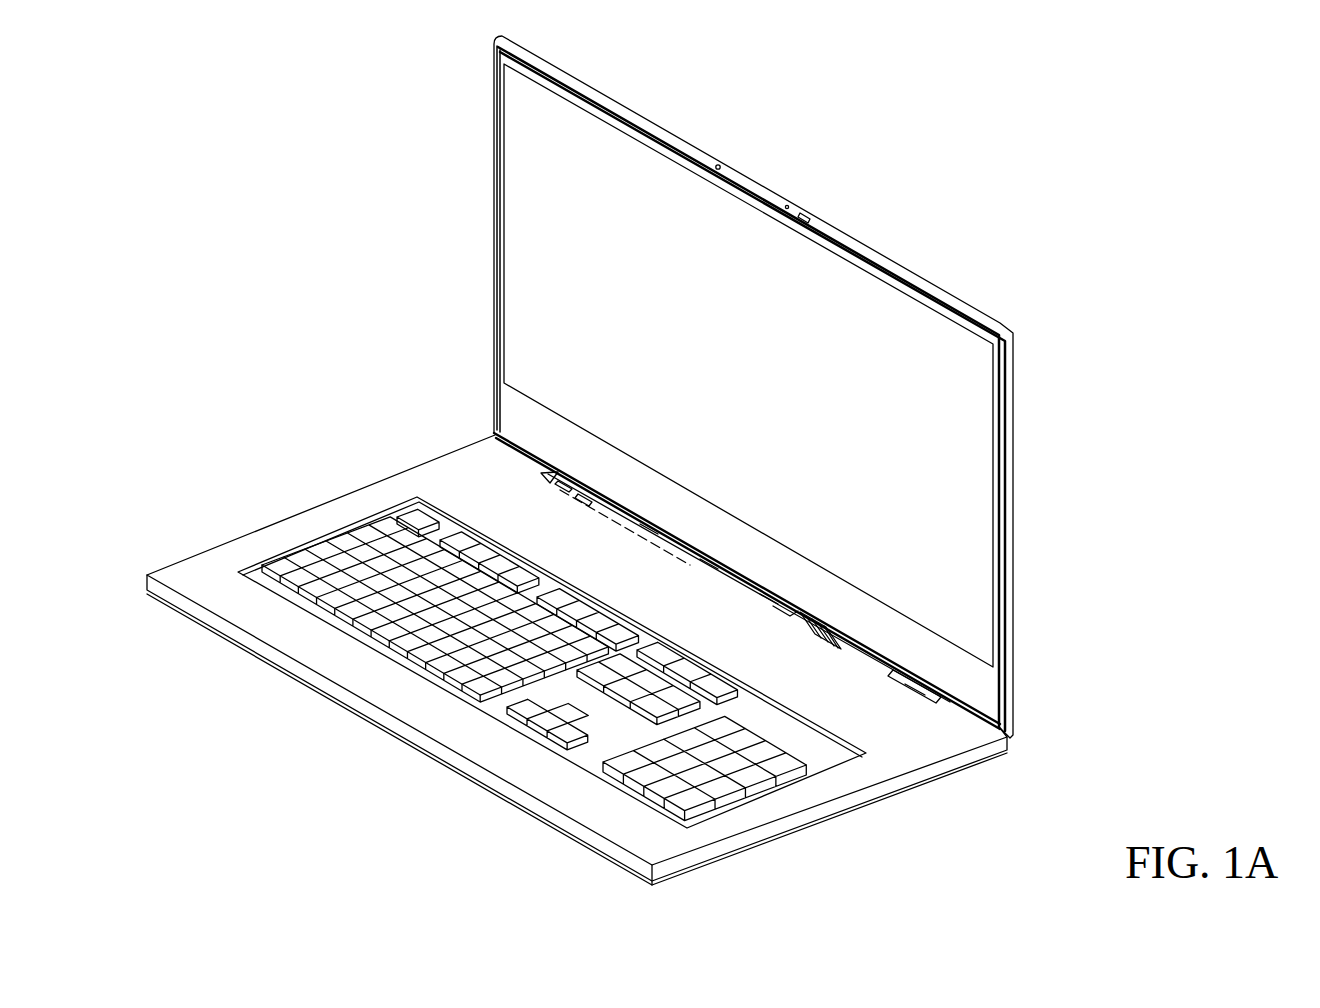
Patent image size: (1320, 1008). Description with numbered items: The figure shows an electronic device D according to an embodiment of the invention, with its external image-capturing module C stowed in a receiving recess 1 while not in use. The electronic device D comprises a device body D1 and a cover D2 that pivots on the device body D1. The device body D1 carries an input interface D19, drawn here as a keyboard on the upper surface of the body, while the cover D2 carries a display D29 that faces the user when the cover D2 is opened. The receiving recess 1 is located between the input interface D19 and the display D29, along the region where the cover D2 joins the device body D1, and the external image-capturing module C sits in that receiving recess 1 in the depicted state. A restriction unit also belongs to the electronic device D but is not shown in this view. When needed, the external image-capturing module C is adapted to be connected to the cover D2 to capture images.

The electronic device D is at (185, 123).
The device body D1 is at (497, 498).
The cover D2 is at (1013, 440).
The display D29 is at (555, 258).
The input interface D19 is at (813, 752).
The external image-capturing module C is at (800, 603).
The receiving recess 1 is at (773, 610).